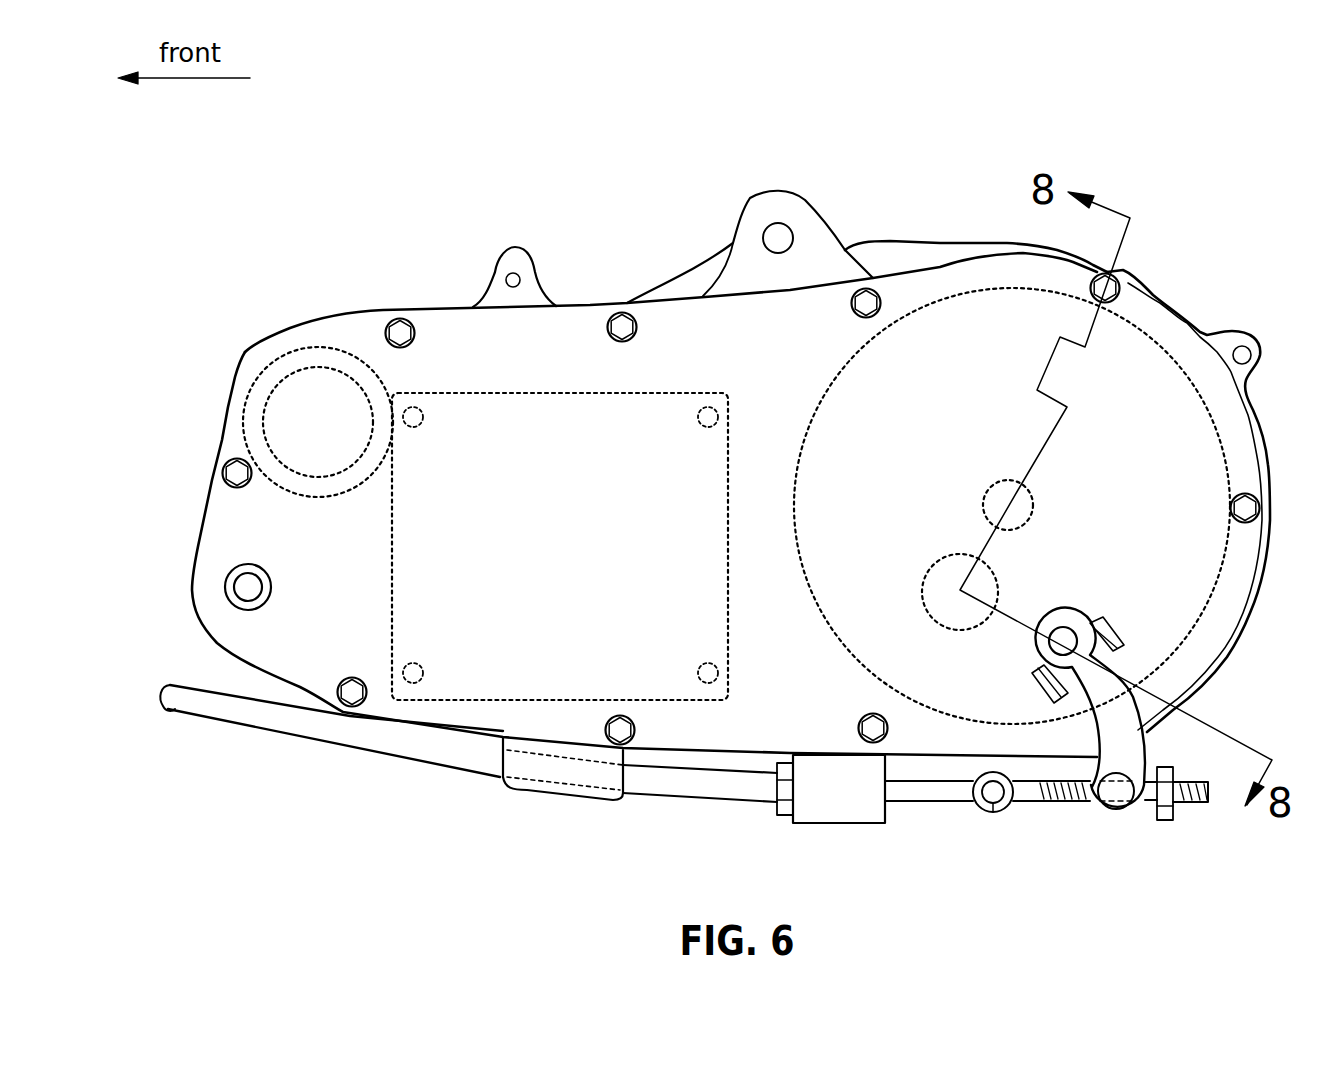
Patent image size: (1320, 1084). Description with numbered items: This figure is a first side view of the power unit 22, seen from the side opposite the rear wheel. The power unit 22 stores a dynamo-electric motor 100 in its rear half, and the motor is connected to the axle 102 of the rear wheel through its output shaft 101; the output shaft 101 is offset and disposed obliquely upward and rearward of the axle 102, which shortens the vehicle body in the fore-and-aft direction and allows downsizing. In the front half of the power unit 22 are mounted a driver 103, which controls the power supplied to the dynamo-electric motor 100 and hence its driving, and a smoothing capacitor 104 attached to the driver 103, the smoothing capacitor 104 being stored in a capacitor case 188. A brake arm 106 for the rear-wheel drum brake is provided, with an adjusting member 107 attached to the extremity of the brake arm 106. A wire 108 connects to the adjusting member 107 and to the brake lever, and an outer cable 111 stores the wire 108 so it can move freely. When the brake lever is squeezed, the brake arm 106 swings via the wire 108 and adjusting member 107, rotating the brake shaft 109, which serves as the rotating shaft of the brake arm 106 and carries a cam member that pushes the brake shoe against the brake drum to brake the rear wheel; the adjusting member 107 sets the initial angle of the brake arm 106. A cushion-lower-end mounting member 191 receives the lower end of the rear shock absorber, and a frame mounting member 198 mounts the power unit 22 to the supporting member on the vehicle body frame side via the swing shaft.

The power unit 22 is at (430, 203).
The dynamo-electric motor 100 is at (928, 290).
The output shaft 101 is at (1036, 510).
The axle 102 is at (944, 554).
The driver 103 is at (478, 702).
The smoothing capacitor 104 is at (310, 362).
The brake arm 106 is at (1107, 820).
The adjusting member 107 is at (1063, 801).
The wire 108 is at (949, 798).
The brake shaft 109 is at (1033, 647).
The outer cable 111 is at (702, 803).
The capacitor case 188 is at (268, 378).
The cushion-lower-end mounting member 191 is at (757, 220).
The frame mounting member 198 is at (246, 628).